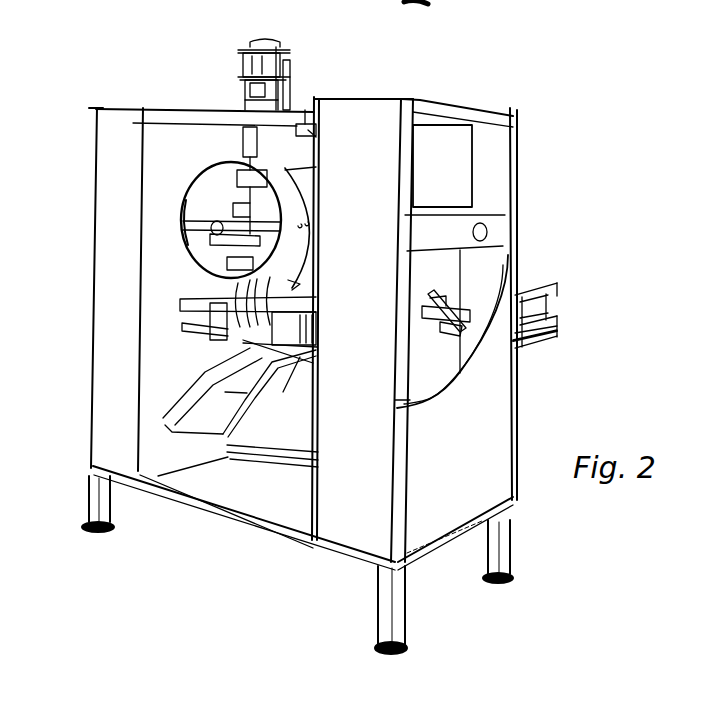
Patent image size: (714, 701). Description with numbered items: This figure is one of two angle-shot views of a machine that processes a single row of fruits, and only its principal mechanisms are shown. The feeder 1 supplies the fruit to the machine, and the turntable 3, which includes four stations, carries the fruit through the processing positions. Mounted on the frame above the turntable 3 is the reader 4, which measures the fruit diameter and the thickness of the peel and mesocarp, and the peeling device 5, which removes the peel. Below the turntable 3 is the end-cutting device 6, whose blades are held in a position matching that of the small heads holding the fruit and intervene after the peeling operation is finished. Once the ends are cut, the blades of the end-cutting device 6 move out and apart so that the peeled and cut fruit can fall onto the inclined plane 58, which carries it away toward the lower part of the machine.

The feeder 1 is at (552, 285).
The turntable 3 is at (208, 195).
The reader 4 is at (306, 110).
The peeling device 5 is at (234, 140).
The end-cutting device 6 is at (230, 287).
The inclined plane 58 is at (207, 413).